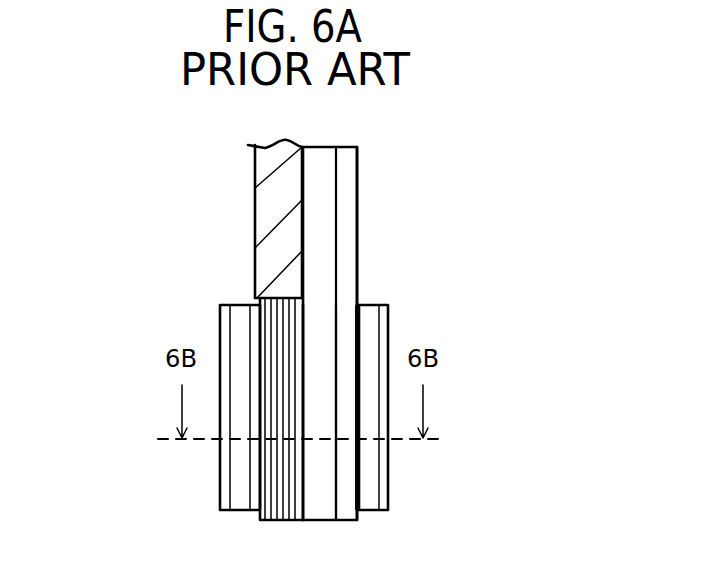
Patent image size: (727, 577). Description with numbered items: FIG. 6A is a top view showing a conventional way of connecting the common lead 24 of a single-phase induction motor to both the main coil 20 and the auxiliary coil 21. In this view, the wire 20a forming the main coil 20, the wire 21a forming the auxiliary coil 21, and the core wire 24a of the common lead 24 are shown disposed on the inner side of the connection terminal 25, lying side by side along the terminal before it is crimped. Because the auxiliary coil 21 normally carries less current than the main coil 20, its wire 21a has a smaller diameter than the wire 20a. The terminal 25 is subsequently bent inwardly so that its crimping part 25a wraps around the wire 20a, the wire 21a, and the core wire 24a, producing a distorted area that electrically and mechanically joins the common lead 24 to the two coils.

The main coil 20 is at (318, 220).
The auxiliary coil 21 is at (345, 272).
The wire 20a is at (320, 327).
The wire 21a is at (343, 353).
The common lead 24 is at (272, 237).
The core wire 24a is at (277, 340).
The connection terminal 25 is at (370, 478).
The crimping part 25a is at (238, 468).